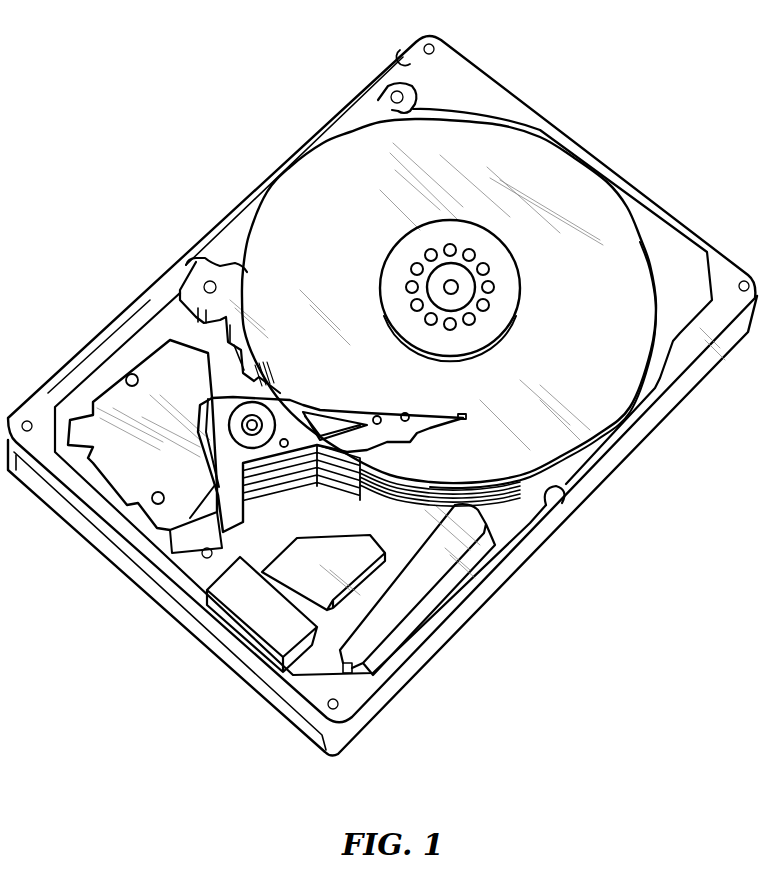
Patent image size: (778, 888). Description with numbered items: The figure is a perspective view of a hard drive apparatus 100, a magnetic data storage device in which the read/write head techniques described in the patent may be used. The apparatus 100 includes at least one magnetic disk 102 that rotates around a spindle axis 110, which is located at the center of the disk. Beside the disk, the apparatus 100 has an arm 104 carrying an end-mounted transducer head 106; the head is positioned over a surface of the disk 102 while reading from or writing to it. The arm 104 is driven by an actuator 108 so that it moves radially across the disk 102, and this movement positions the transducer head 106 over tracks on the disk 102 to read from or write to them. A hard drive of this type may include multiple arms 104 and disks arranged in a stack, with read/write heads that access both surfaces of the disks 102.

The hard drive apparatus 100 is at (208, 70).
The magnetic disk 102 is at (300, 187).
The arm 104 is at (378, 433).
The transducer head 106 is at (460, 417).
The actuator 108 is at (147, 363).
The spindle axis 110 is at (456, 292).